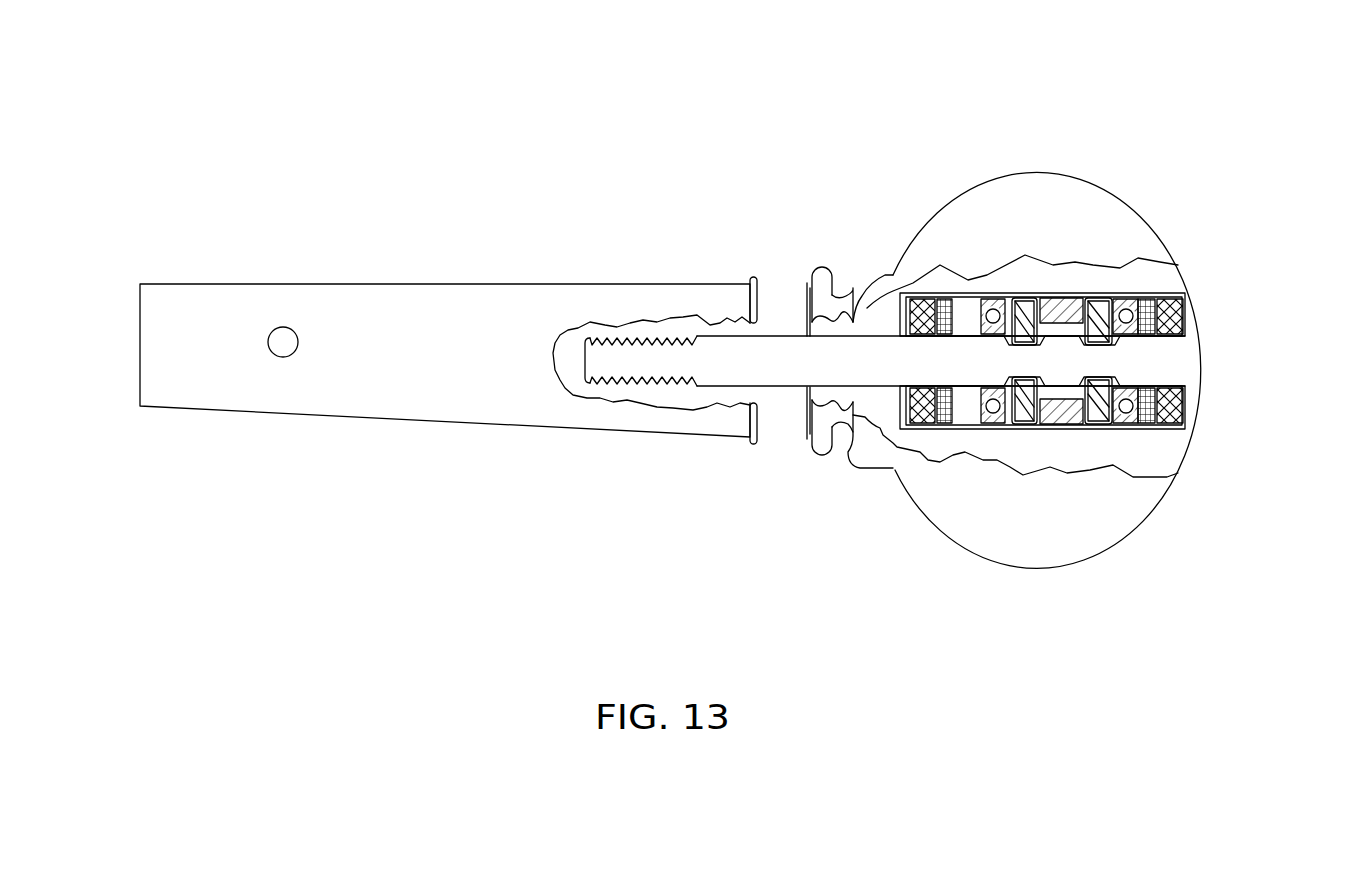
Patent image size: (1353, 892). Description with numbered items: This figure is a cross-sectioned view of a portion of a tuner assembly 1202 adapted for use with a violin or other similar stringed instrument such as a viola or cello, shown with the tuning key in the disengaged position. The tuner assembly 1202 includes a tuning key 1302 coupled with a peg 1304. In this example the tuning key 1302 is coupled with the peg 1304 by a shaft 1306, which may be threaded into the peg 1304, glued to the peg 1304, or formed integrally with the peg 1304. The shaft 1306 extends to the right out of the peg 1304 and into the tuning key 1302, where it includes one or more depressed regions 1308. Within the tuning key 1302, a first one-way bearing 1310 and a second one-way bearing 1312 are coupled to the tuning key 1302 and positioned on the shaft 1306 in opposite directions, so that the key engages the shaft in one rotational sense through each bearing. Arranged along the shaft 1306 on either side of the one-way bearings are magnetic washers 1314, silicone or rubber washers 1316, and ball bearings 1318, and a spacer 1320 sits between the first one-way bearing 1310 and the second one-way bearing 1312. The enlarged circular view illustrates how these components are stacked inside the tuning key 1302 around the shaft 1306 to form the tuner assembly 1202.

The tuner assembly 1202 is at (255, 112).
The tuning key 1302 is at (920, 526).
The peg 1304 is at (431, 283).
The shaft 1306 is at (726, 336).
The depressed regions 1308 is at (1020, 378).
The first one-way bearing 1310 is at (1023, 428).
The second one-way bearing 1312 is at (1100, 428).
The magnetic washers 1314 is at (918, 297).
The silicone or rubber washers 1316 is at (938, 428).
The ball bearings 1318 is at (993, 300).
The spacer 1320 is at (1066, 299).